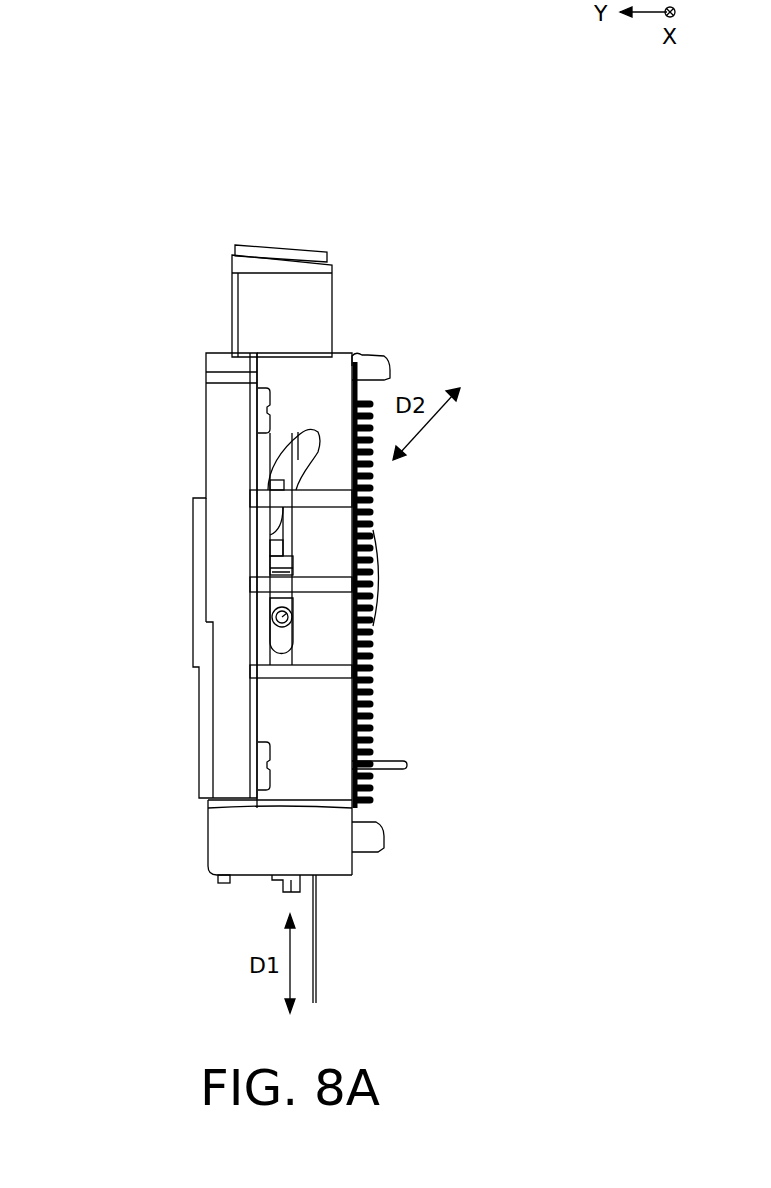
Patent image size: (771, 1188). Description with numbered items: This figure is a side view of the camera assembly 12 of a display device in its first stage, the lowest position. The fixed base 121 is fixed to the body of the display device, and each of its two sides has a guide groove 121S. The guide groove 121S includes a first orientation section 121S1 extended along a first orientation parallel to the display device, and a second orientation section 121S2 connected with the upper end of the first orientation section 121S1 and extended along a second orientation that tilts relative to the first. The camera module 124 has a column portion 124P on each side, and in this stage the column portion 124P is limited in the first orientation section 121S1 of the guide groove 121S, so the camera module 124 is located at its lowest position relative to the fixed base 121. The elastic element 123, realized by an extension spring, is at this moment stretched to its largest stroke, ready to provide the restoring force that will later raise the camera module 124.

The camera assembly 12 is at (82, 126).
The fixed base 121 is at (199, 732).
The guide groove 121S is at (173, 499).
The first orientation section 121S1 is at (268, 548).
The second orientation section 121S2 is at (268, 444).
The elastic element 123 is at (367, 560).
The camera module 124 is at (232, 262).
The column portion 124P is at (292, 613).